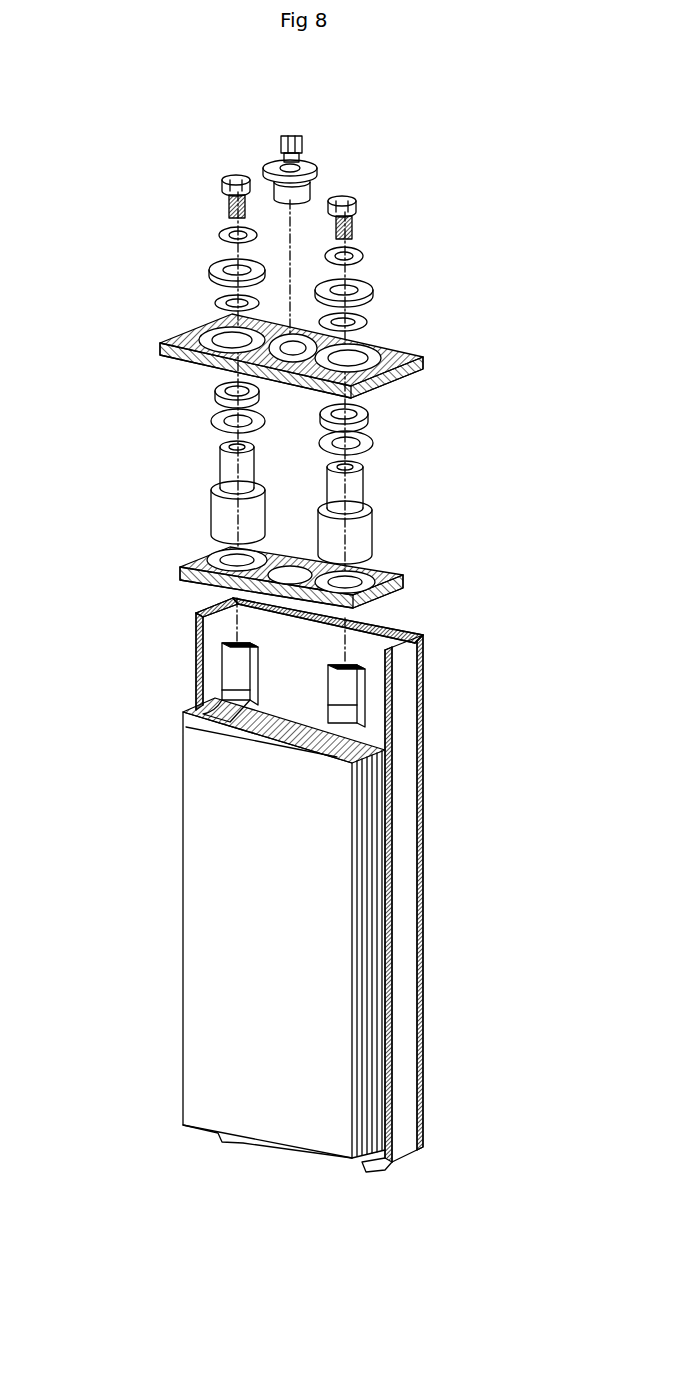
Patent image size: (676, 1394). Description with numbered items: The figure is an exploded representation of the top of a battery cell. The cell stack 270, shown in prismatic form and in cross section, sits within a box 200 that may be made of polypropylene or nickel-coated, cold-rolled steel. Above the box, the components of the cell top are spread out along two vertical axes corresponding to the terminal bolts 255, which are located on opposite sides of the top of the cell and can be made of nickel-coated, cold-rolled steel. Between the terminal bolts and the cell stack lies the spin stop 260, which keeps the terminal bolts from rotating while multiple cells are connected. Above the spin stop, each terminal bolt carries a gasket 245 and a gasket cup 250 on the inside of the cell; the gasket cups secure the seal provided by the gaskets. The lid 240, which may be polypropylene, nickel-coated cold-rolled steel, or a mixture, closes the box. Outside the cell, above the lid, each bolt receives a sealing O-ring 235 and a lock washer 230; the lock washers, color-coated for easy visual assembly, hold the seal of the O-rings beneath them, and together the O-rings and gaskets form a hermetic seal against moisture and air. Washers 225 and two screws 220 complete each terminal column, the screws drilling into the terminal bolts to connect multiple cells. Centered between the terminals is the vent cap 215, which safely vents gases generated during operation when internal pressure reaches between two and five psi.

The box 200 is at (427, 667).
The vent cap 215 is at (304, 133).
The screws 220 is at (360, 200).
The washers 225 is at (365, 254).
The lock washers 230 is at (375, 290).
The sealing O-rings 235 is at (370, 322).
The lid 240 is at (425, 362).
The gaskets 245 is at (372, 417).
The gasket cups 250 is at (375, 447).
The terminal bolts 255 is at (380, 515).
The spin stop 260 is at (407, 585).
The cell stack 270 is at (180, 743).